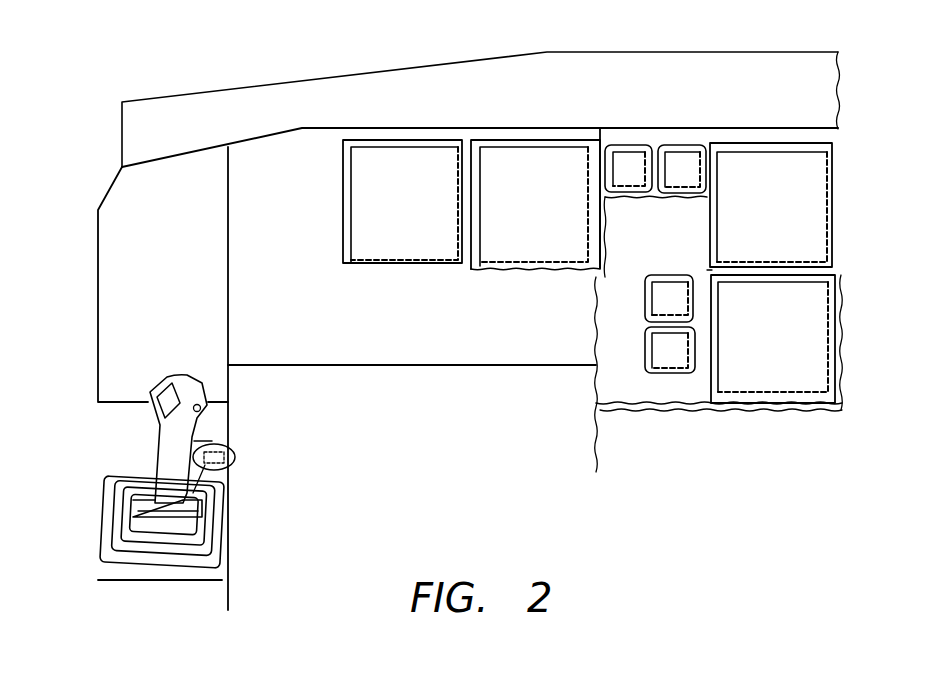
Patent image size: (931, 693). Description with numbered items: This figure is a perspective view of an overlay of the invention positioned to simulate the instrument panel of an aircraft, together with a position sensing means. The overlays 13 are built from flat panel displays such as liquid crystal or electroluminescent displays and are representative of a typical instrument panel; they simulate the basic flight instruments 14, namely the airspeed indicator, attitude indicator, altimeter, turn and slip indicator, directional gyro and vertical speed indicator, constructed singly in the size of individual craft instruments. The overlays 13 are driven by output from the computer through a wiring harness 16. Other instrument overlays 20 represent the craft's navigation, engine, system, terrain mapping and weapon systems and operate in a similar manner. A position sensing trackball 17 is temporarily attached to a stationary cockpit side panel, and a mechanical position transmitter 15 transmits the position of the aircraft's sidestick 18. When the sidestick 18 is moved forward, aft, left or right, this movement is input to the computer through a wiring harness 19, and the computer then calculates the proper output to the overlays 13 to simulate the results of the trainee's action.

The overlays 13 is at (466, 268).
The instruments 14 is at (467, 145).
The mechanical position transmitter 15 is at (212, 441).
The wiring harness 16 is at (595, 452).
The trackball 17 is at (234, 458).
The sidestick 18 is at (178, 378).
The wiring harness 19 is at (233, 590).
The other instrument overlays 20 is at (710, 270).